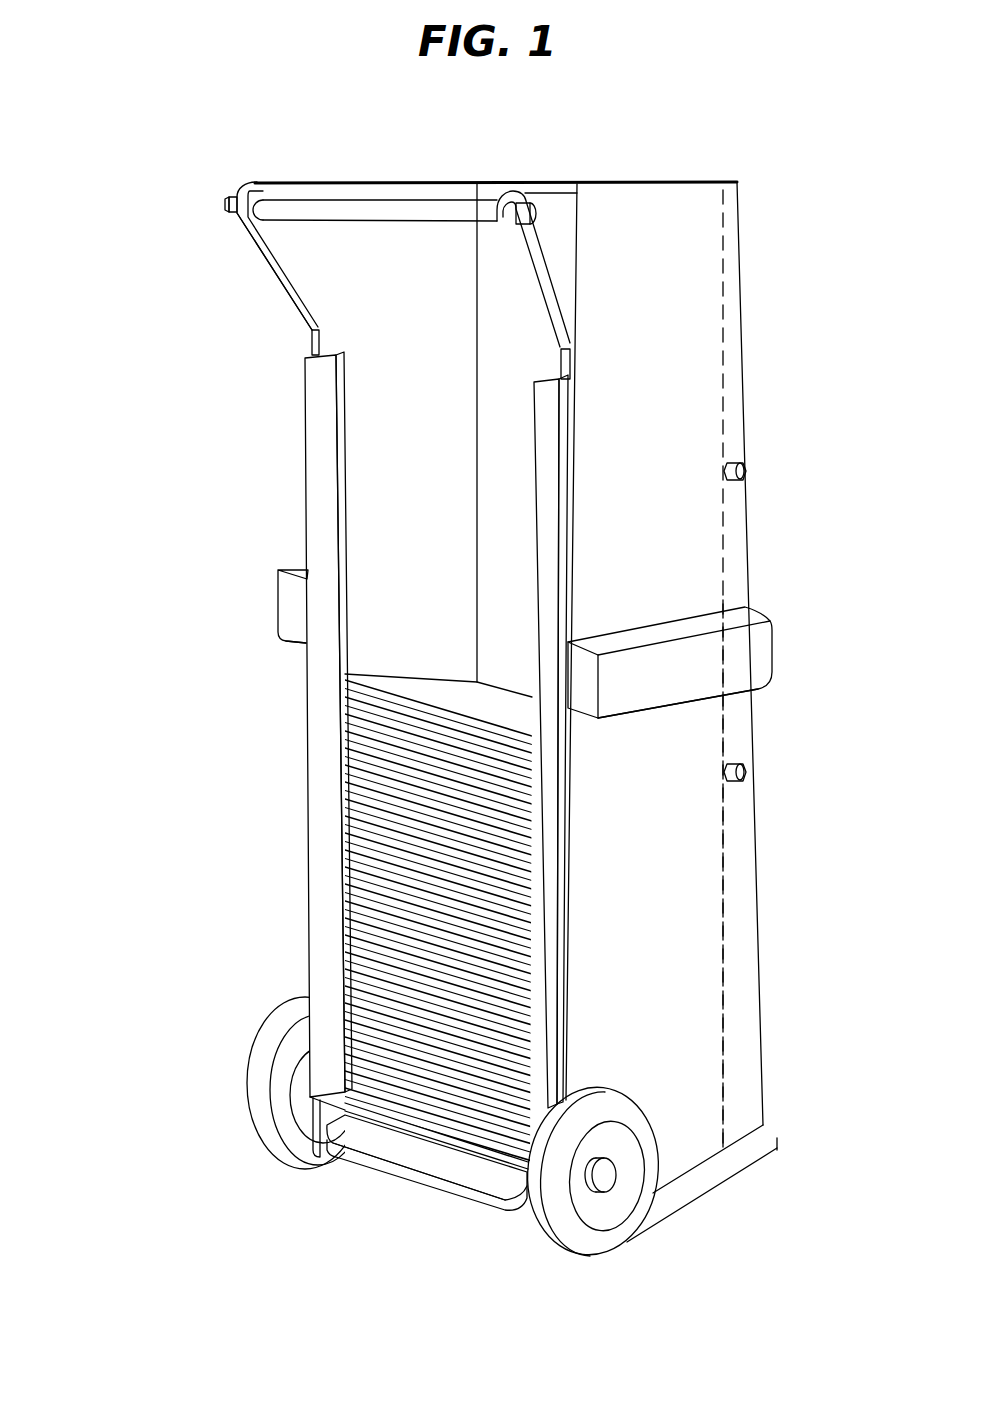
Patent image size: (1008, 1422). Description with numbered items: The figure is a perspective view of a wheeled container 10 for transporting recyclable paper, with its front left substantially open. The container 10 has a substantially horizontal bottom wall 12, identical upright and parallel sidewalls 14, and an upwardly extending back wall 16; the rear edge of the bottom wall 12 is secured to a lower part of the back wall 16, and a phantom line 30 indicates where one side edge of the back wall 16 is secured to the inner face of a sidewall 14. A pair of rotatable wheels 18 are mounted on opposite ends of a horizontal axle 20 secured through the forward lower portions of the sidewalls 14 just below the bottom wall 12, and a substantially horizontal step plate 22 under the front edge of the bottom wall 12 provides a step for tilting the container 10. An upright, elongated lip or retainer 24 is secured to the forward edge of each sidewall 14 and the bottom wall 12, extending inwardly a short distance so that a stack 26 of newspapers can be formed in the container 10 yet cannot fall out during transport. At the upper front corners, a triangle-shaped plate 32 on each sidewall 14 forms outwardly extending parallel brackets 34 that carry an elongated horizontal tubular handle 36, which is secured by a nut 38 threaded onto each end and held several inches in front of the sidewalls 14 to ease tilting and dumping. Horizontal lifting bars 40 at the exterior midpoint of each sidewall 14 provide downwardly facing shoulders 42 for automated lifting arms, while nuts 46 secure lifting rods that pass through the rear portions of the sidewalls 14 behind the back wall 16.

The container 10 is at (690, 140).
The bottom wall 12 is at (448, 1147).
The sidewalls 14 is at (308, 344).
The back wall 16 is at (496, 186).
The rotatable wheels 18 is at (292, 1153).
The horizontal axle 20 is at (602, 1180).
The step plate 22 is at (387, 1162).
The lip or retainer 24 is at (533, 428).
The stack of recyclable paper 26 is at (425, 655).
The phantom line 30 is at (723, 845).
The triangle-shaped plate 32 is at (268, 270).
The brackets 34 is at (247, 165).
The tubular handle 36 is at (440, 223).
The nut 38 is at (224, 205).
The lifting bars 40 is at (295, 600).
The shoulders 42 is at (295, 645).
The nuts 46 is at (747, 471).